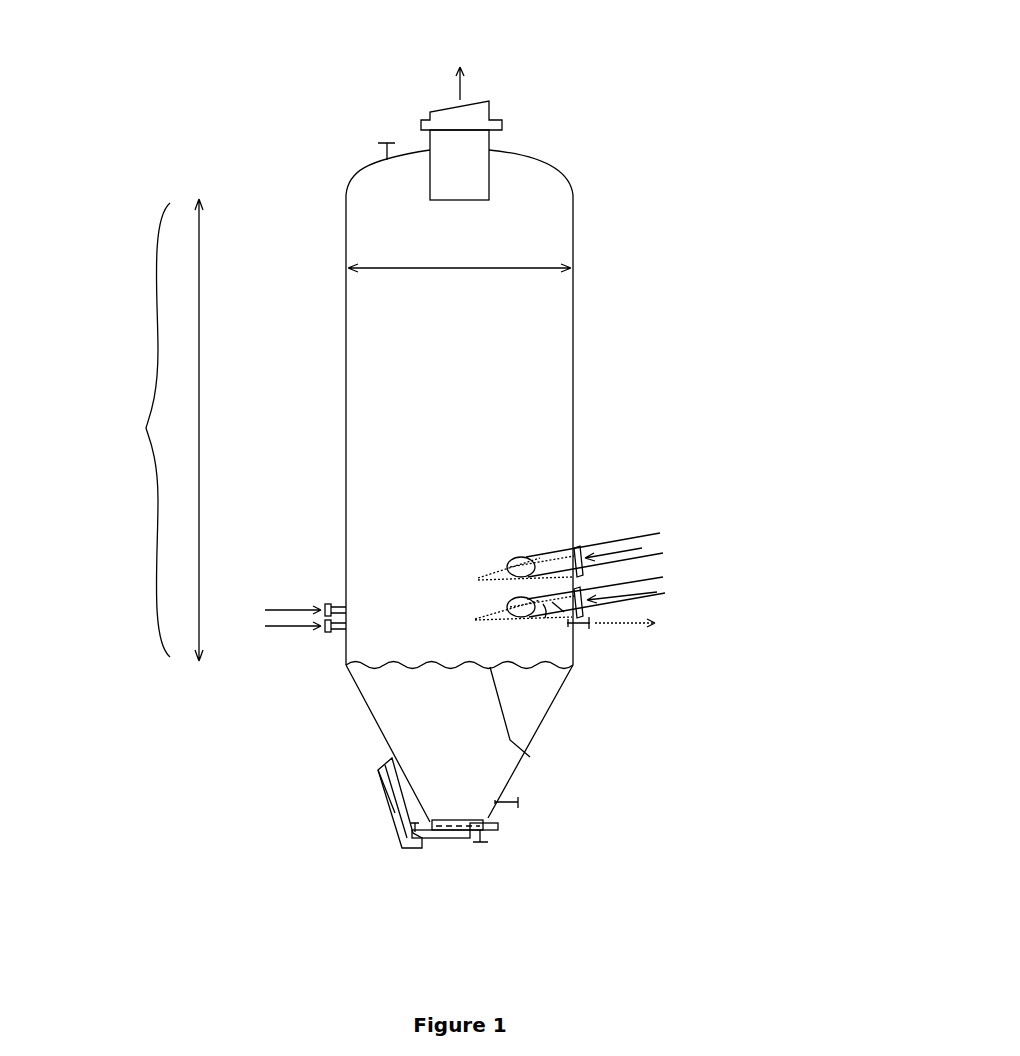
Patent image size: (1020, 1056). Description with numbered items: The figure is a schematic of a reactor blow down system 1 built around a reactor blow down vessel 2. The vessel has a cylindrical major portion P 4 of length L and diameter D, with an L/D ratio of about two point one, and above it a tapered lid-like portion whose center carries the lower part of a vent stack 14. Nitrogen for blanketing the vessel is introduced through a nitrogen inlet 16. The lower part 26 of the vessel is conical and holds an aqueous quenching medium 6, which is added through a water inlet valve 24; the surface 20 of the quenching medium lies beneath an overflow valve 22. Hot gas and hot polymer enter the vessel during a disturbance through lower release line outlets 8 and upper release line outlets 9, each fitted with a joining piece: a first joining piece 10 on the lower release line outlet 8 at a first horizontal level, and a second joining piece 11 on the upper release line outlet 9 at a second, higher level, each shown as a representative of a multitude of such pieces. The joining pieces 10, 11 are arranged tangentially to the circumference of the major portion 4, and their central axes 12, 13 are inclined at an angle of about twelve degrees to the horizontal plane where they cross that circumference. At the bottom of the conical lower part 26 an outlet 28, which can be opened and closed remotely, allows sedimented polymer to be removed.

The reactor blow down system 1 is at (685, 143).
The reactor blow down vessel 2 is at (385, 367).
The major portion P 4 is at (169, 430).
The aqueous quenching medium 6 is at (412, 695).
The lower release line outlet 8 is at (658, 595).
The upper release line outlet 9 is at (648, 535).
The first joining piece 10 is at (507, 587).
The second joining piece 11 is at (545, 556).
The central axis of first joining piece 12 is at (558, 605).
The central axis of second joining piece 13 is at (557, 562).
The vent stack 14 is at (473, 123).
The nitrogen inlet 16 is at (332, 602).
The surface of the aqueous quenching medium 20 is at (510, 740).
The overflow valve 22 is at (580, 627).
The water inlet valve 24 is at (332, 637).
The lower part 26 is at (363, 703).
The outlet 28 is at (443, 842).